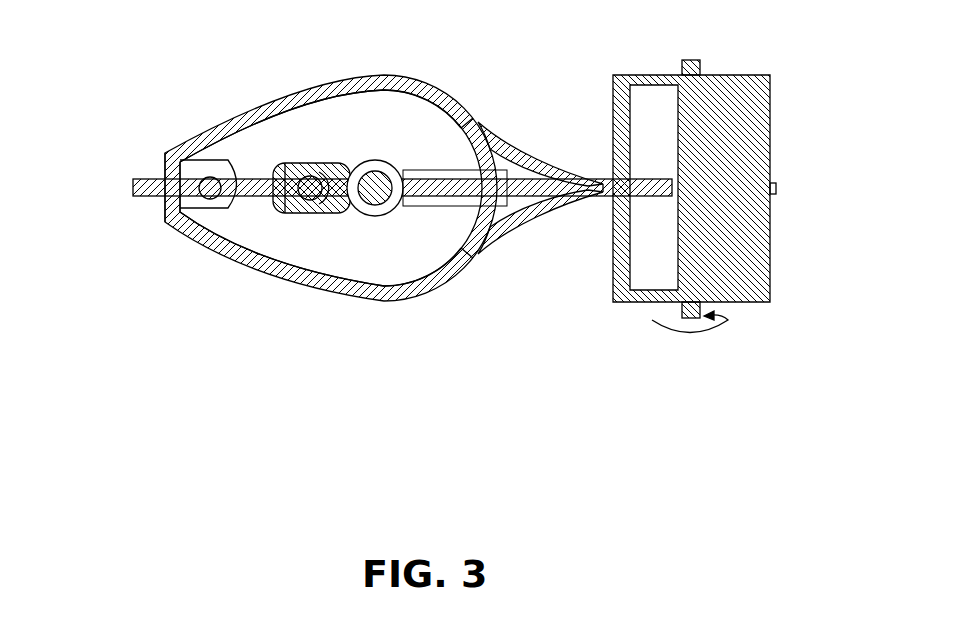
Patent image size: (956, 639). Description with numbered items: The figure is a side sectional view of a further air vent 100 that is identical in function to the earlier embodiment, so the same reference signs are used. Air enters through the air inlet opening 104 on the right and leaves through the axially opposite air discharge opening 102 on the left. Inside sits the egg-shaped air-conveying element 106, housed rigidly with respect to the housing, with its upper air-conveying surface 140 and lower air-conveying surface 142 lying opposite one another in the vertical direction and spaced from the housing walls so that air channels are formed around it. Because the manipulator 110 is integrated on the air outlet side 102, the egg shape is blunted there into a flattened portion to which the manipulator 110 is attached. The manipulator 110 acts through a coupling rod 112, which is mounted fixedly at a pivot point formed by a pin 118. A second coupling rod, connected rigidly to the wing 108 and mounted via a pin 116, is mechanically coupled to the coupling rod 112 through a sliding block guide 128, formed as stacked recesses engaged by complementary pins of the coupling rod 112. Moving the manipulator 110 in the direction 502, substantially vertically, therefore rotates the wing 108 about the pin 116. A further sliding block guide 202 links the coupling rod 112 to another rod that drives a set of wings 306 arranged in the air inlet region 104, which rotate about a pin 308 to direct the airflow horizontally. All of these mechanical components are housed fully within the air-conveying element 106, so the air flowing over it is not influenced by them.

The air vent 100 is at (186, 402).
The air discharge opening 102 is at (122, 131).
The air inlet opening 104 is at (858, 201).
The air-conveying element 106 is at (347, 77).
The wing 108 is at (518, 162).
The manipulator 110 is at (133, 186).
The coupling rod 112 is at (253, 192).
The pin 116 is at (382, 216).
The pin 118 is at (208, 200).
The sliding block guide 128 is at (280, 163).
The air-conveying surface 140 is at (384, 73).
The air-conveying surface 142 is at (397, 303).
The further sliding block guide 202 is at (310, 214).
The wing 306 is at (735, 100).
The pin 308 is at (690, 60).
The direction 502 is at (690, 332).